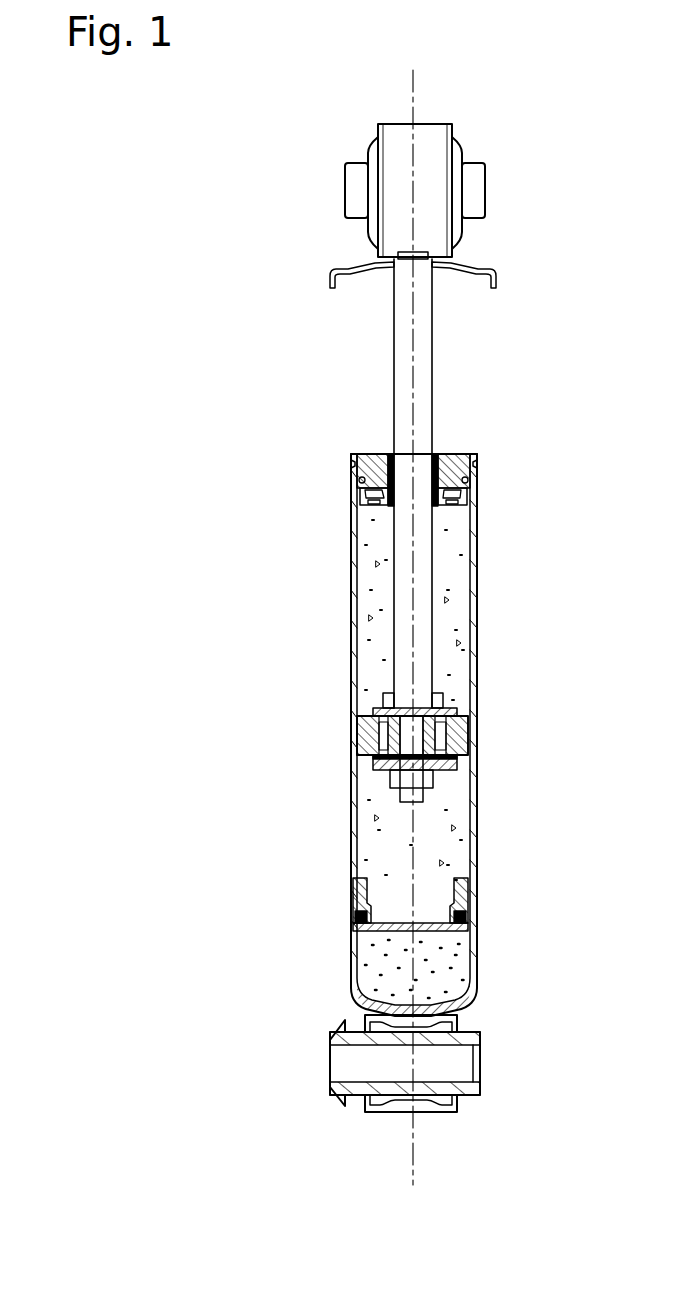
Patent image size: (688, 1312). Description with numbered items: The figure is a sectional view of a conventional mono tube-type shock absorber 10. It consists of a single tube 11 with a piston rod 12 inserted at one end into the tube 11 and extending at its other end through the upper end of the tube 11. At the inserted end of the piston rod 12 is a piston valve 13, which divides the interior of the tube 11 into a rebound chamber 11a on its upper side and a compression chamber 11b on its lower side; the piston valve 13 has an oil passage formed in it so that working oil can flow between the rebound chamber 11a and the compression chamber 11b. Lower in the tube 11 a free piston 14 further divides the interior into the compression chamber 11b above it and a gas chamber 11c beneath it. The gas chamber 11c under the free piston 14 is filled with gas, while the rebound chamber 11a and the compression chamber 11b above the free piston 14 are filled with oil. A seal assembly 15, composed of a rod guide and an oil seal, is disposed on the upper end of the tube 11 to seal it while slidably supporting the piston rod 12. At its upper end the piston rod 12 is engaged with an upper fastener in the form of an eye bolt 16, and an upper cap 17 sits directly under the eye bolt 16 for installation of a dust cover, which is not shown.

The mono tube-type shock absorber 10 is at (530, 357).
The tube 11 is at (476, 552).
The rebound chamber 11a is at (466, 592).
The compression chamber 11b is at (465, 806).
The gas chamber 11c is at (462, 958).
The piston rod 12 is at (432, 358).
The piston valve 13 is at (468, 730).
The free piston 14 is at (468, 898).
The seal assembly 15 is at (477, 462).
The eye bolt 16 is at (443, 191).
The upper cap 17 is at (474, 271).